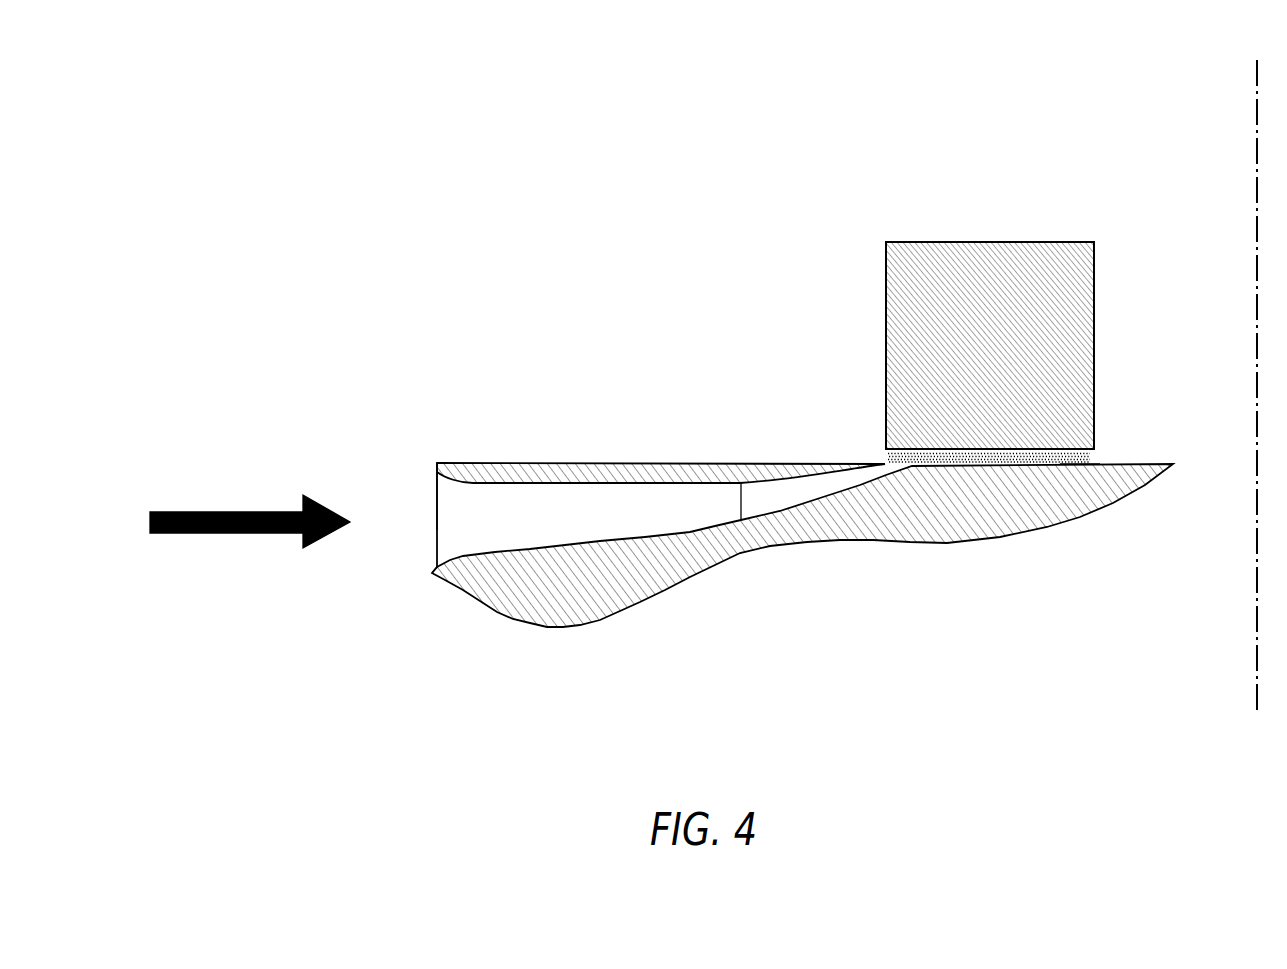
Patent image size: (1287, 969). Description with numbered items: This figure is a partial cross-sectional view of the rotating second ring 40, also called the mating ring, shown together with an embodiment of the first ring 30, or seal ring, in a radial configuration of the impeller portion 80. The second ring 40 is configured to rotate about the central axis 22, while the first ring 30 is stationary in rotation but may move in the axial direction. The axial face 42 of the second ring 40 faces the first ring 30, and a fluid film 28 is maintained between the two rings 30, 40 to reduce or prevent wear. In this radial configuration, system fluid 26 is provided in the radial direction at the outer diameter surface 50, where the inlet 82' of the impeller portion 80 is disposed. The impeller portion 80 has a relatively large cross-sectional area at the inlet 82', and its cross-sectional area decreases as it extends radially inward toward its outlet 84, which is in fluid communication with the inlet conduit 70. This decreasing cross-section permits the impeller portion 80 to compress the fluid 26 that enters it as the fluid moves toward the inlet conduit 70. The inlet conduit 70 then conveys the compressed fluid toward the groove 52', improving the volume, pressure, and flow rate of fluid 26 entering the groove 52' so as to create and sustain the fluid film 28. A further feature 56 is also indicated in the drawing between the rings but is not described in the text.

The central axis 22 is at (1255, 95).
The system fluid 26 is at (217, 510).
The fluid film 28 is at (1104, 456).
The first ring 30 is at (970, 242).
The second ring 40 is at (1020, 573).
The axial face 42 is at (535, 460).
The outer diameter surface 50 is at (432, 573).
The groove 52' is at (1109, 496).
The gap 56 is at (857, 440).
The inlet conduit 70 is at (788, 477).
The impeller portion 80 is at (537, 538).
The inlet 82' is at (412, 477).
The outlet 84 is at (737, 503).